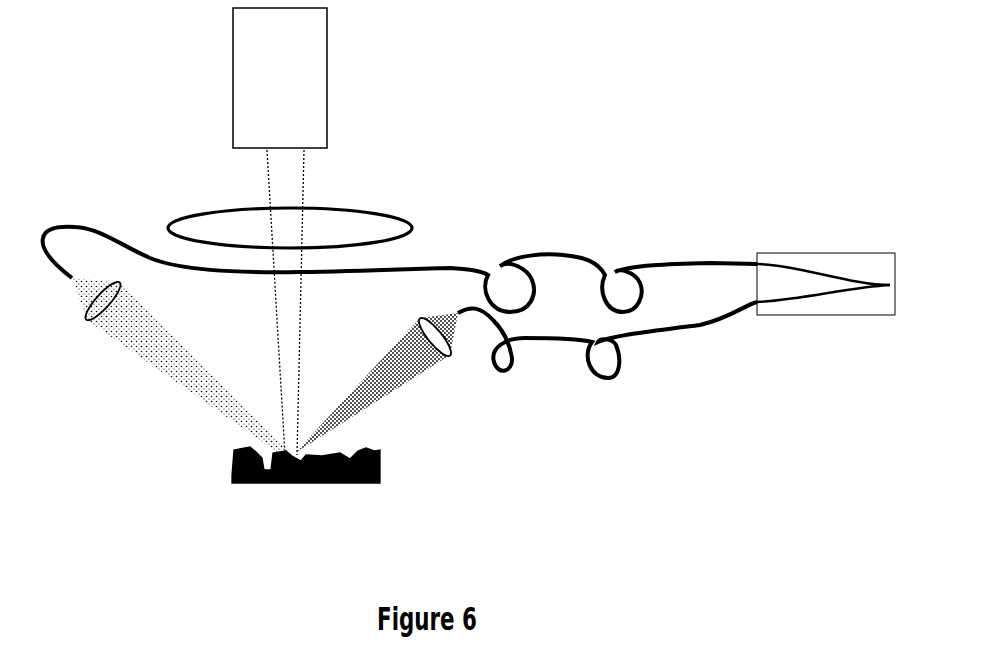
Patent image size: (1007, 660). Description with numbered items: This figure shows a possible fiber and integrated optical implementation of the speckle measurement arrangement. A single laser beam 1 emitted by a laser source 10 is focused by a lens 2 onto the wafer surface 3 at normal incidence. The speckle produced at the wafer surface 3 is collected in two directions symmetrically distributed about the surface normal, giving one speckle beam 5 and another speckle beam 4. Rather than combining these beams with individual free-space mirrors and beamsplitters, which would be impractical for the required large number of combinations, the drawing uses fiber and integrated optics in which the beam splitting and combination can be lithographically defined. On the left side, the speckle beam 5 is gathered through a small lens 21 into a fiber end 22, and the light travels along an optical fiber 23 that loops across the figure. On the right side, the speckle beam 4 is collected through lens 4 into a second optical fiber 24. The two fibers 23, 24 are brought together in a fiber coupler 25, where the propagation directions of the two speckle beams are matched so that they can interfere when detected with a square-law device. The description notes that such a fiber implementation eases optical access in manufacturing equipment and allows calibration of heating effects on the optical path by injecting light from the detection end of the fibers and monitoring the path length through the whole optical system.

The laser source 10 is at (227, 70).
The laser beam 1 is at (310, 165).
The lens 2 is at (390, 210).
The wafer surface 3 is at (383, 452).
The speckle beam 4 is at (433, 372).
The speckle beam 5 is at (162, 372).
The illumination lens 21 is at (82, 314).
The illumination fiber end 22 is at (91, 234).
The optical fiber 23 is at (453, 285).
The optical fiber 24 is at (607, 349).
The fiber coupler 25 is at (826, 303).